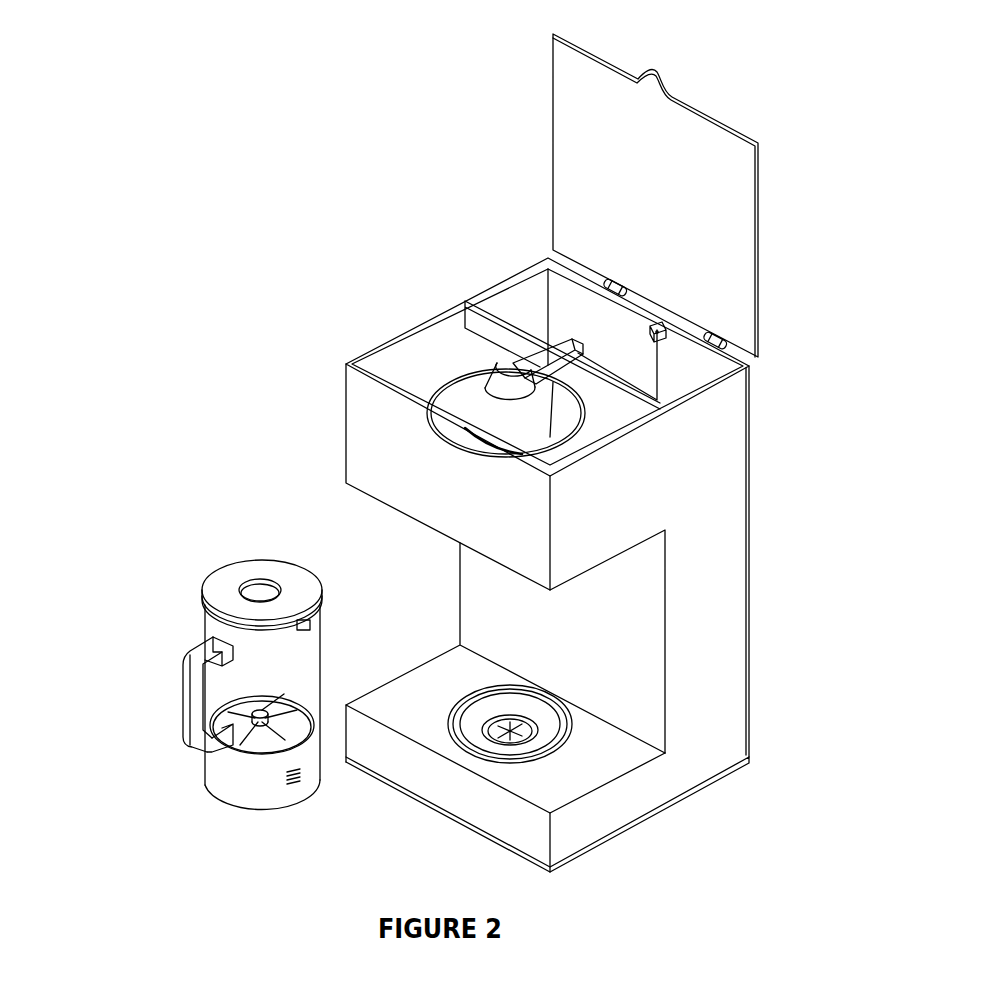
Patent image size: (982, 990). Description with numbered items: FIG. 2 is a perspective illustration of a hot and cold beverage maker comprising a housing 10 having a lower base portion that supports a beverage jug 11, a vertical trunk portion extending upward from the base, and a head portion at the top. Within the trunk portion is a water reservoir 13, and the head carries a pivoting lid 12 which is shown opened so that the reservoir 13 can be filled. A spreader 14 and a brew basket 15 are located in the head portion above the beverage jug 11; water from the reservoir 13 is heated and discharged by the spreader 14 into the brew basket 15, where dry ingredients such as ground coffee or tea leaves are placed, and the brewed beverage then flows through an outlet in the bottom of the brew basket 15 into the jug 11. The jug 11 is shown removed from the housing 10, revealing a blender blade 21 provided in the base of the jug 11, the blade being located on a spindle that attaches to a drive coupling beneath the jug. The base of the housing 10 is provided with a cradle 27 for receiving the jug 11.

The housing 10 is at (708, 605).
The beverage jug 11 is at (178, 675).
The pivoting lid 12 is at (582, 105).
The water reservoir 13 is at (673, 380).
The spreader 14 is at (503, 363).
The brew basket 15 is at (465, 413).
The blender blade 21 is at (268, 717).
The cup holder 27 is at (503, 723).